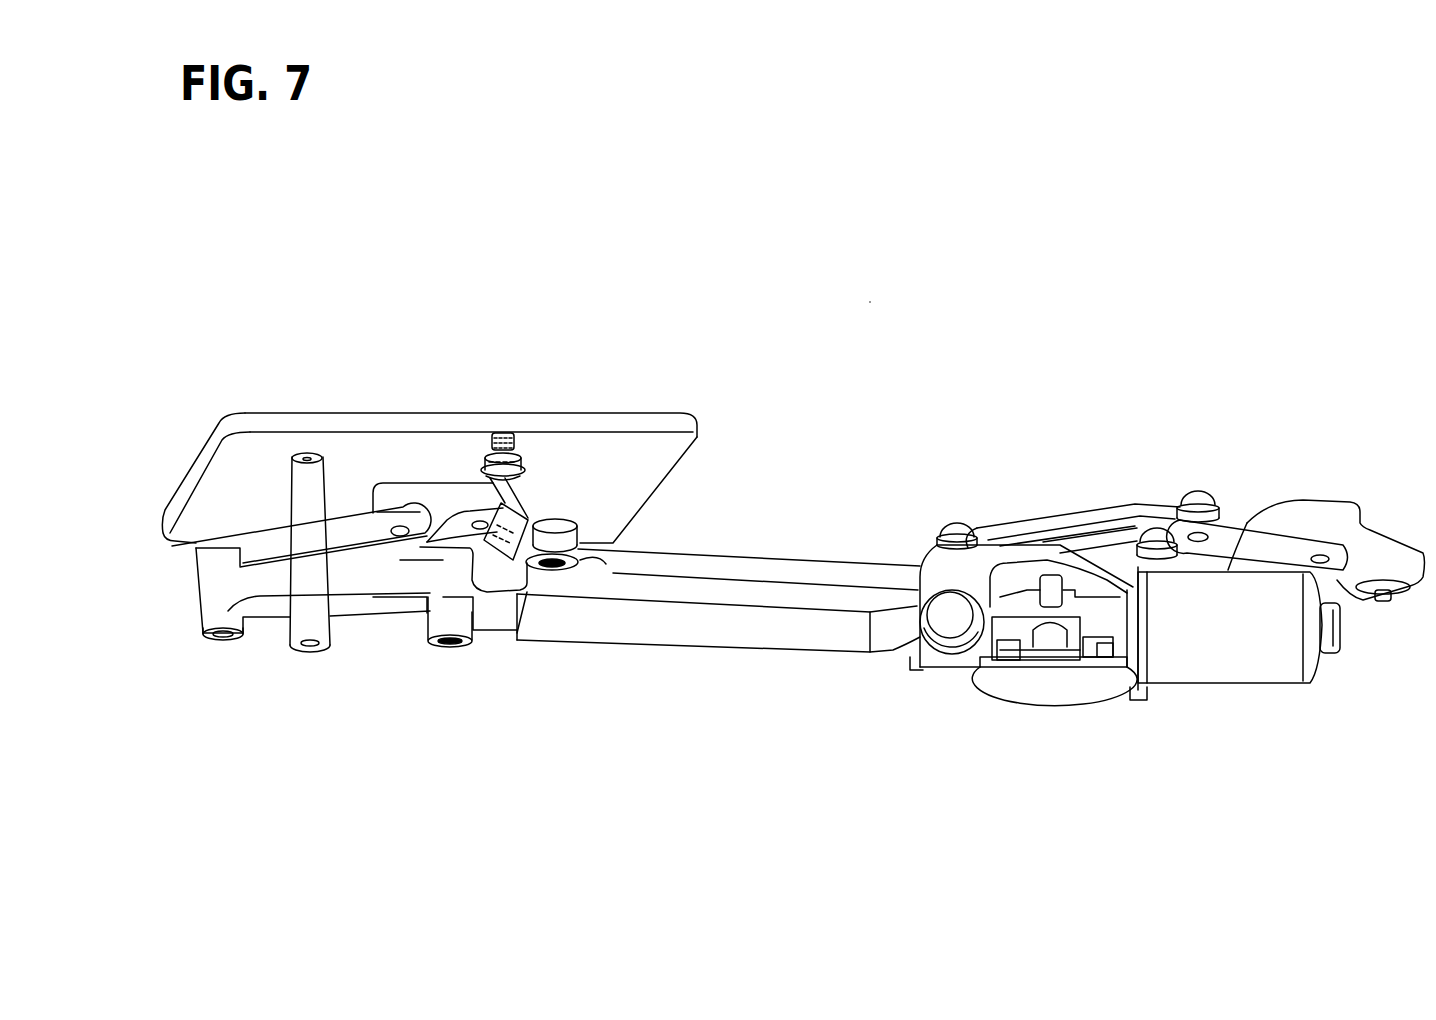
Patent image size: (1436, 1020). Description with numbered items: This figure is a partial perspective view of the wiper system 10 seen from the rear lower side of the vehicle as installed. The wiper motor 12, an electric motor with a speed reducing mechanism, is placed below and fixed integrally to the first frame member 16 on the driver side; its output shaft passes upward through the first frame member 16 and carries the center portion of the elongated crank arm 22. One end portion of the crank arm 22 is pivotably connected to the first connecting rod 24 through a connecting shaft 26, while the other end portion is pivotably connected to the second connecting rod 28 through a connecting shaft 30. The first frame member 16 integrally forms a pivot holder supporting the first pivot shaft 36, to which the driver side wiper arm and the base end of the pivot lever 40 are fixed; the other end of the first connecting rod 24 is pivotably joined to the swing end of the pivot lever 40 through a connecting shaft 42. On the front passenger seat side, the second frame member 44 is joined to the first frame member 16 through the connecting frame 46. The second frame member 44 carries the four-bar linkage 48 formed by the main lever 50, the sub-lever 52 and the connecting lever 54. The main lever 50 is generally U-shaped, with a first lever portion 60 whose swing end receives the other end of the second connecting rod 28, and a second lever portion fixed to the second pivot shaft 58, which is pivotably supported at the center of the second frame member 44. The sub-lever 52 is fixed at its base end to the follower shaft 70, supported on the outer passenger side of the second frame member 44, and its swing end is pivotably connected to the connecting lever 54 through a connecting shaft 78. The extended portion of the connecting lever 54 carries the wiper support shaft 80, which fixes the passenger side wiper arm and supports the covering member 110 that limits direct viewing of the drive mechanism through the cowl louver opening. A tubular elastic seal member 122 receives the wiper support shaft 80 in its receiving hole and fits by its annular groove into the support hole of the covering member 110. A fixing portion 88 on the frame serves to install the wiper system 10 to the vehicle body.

The wiper system 10 is at (870, 300).
The wiper motor 12 is at (1078, 722).
The first frame member 16 is at (910, 643).
The crank arm 22 is at (1103, 543).
The first connecting rod 24 is at (1033, 520).
The connecting shaft 26 is at (958, 522).
The second connecting rod 28 is at (838, 552).
The connecting shaft 30 is at (1157, 527).
The first pivot shaft 36 is at (1350, 550).
The pivot lever 40 is at (1305, 535).
The connecting shaft 42 is at (1200, 490).
The second frame member 44 is at (357, 627).
The connecting frame 46 is at (757, 650).
The four-bar linkage 48 is at (553, 495).
The main lever 50 is at (533, 597).
The sub-lever 52 is at (262, 538).
The connecting lever 54 is at (430, 485).
The second pivot shaft 58 is at (457, 650).
The first lever portion 60 is at (557, 570).
The follower shaft 70 is at (222, 642).
The connecting shaft 78 is at (400, 536).
The wiper support shaft 80 is at (470, 430).
The fixing portion 88 is at (945, 622).
The covering member 110 is at (645, 413).
The seal member 122 is at (517, 463).